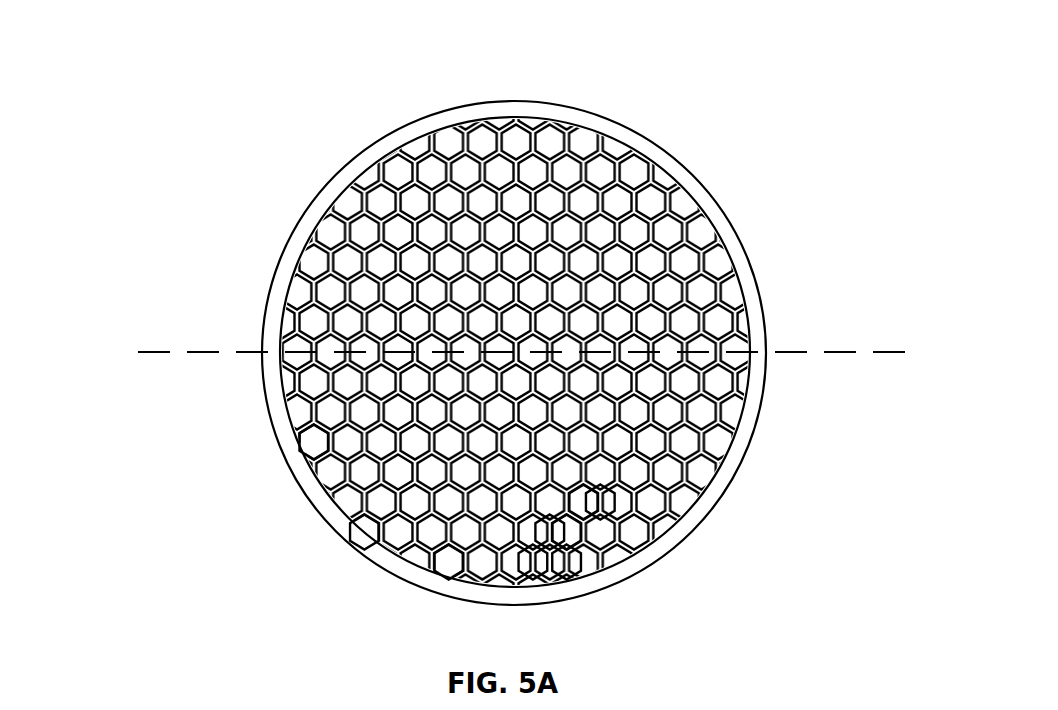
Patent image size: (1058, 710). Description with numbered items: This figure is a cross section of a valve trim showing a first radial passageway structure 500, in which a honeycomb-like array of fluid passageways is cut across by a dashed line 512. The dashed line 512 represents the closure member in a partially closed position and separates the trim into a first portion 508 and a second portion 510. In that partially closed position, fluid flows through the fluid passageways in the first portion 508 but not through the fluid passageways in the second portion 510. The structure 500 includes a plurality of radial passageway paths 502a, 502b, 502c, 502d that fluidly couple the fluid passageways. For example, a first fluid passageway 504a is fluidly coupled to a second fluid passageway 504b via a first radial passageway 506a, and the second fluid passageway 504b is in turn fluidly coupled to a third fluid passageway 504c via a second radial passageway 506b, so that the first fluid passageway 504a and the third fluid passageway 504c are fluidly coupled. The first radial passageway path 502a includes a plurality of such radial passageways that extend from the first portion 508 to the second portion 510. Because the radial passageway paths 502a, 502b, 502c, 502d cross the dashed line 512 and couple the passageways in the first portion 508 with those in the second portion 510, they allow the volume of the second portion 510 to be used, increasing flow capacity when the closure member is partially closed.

The first radial passageway structure 500 is at (222, 58).
The second portion 510 is at (173, 282).
The first portion 508 is at (172, 426).
The dashed line 512 is at (138, 352).
The first radial passageway path 502a is at (537, 580).
The radial passageway path 502b is at (435, 567).
The radial passageway path 502c is at (357, 527).
The radial passageway path 502d is at (301, 440).
The first fluid passageway 504a is at (547, 557).
The second fluid passageway 504b is at (563, 542).
The third fluid passageway 504c is at (587, 497).
The first radial passageway 506a is at (550, 558).
The second radial passageway 506b is at (567, 530).